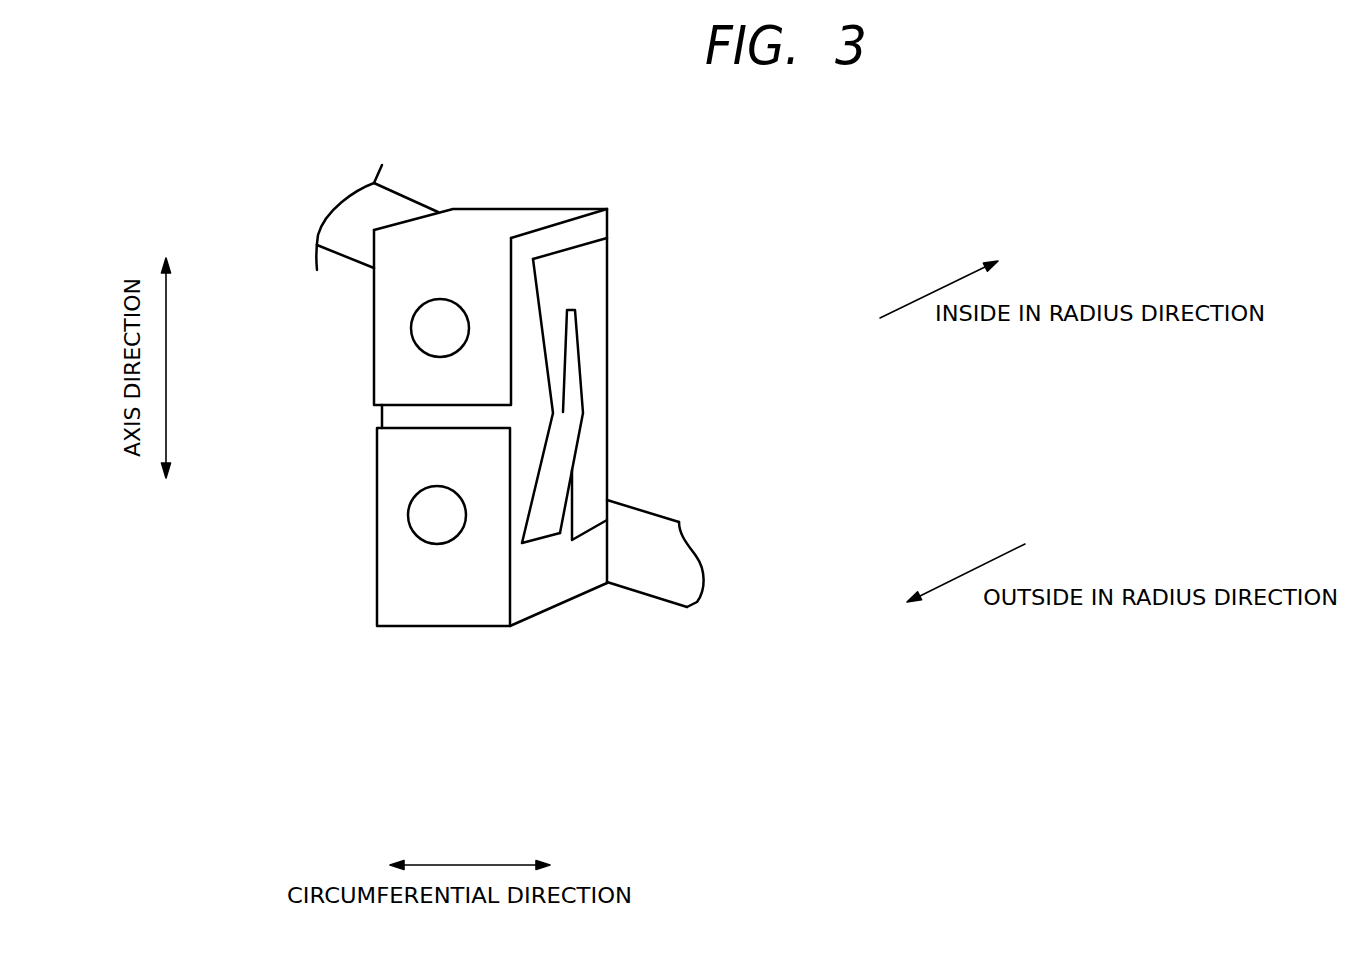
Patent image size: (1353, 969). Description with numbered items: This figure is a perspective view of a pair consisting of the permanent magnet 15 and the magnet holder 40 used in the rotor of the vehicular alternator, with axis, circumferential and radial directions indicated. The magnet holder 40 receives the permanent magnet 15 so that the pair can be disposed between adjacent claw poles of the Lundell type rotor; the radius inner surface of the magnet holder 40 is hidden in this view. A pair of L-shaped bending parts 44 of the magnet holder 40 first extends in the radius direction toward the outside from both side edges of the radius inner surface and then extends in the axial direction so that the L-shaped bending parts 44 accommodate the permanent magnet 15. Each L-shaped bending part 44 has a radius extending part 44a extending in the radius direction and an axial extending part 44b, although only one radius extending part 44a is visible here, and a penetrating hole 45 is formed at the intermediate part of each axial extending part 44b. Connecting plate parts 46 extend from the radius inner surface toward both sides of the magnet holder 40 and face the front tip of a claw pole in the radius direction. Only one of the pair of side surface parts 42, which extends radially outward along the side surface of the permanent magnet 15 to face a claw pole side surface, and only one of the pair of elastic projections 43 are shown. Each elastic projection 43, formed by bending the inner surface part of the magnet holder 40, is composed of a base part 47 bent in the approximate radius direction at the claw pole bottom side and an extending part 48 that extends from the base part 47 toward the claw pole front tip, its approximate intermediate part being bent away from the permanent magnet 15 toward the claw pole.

The permanent magnet 15 is at (533, 573).
The magnet holder 40 is at (561, 180).
The side surface part 42 is at (597, 390).
The elastic projection 43 is at (645, 368).
The L-shaped bending part 44 is at (415, 246).
The radius extending part 44a is at (488, 230).
The axial extending part 44b is at (400, 278).
The penetrating hole 45 is at (440, 337).
The connecting plate part 46 is at (393, 205).
The base part 47 is at (552, 303).
The extending part 48 is at (575, 357).